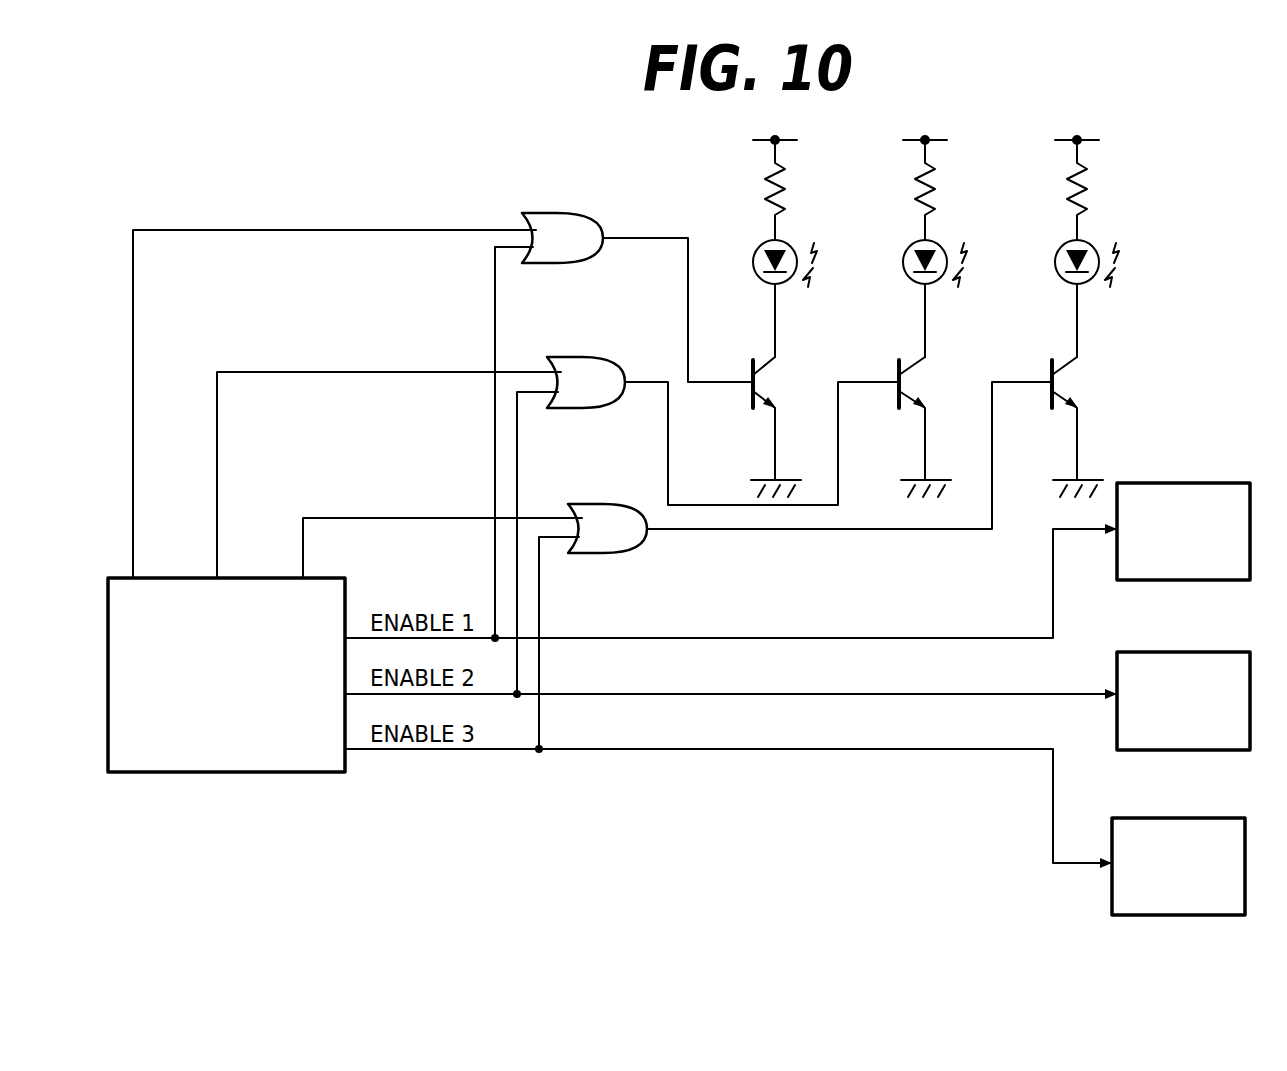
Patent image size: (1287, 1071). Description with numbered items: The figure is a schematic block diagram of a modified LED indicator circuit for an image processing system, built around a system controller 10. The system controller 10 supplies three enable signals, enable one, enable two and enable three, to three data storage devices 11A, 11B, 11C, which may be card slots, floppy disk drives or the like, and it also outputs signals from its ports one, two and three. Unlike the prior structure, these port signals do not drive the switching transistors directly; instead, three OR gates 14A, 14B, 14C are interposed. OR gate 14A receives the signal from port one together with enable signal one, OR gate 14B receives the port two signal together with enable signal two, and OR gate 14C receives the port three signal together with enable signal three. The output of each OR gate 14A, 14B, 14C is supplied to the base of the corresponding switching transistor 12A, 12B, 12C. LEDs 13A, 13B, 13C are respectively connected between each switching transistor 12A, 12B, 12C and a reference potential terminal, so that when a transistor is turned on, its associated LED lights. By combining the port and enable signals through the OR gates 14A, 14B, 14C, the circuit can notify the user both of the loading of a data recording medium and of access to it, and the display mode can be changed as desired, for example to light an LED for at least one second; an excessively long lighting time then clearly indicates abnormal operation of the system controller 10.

The system controller 10 is at (312, 773).
The data storage device 11A is at (1208, 482).
The data storage device 11B is at (1208, 651).
The data storage device 11C is at (1203, 817).
The switching transistor 12A is at (758, 427).
The switching transistor 12B is at (909, 427).
The switching transistor 12C is at (1060, 427).
The LED 13A is at (766, 246).
The LED 13B is at (914, 246).
The LED 13C is at (1065, 246).
The OR gate 14A is at (583, 211).
The OR gate 14B is at (583, 355).
The OR gate 14C is at (605, 503).